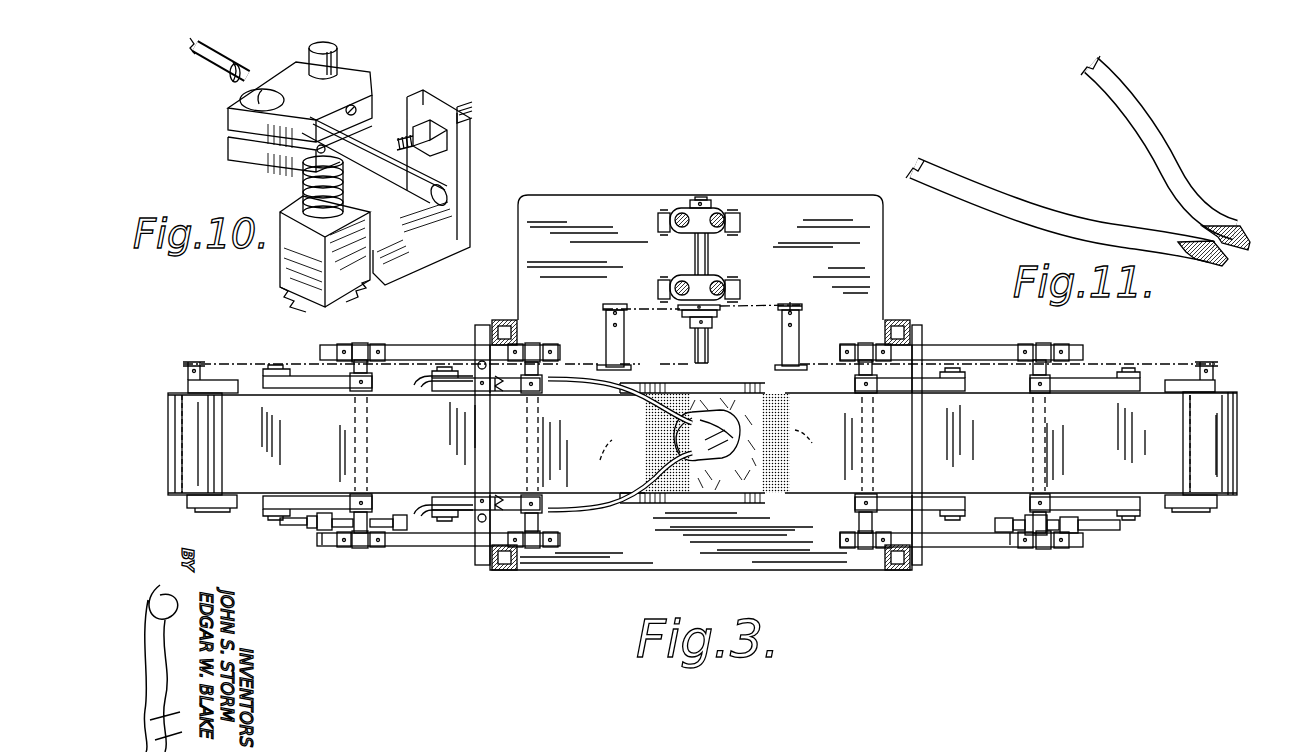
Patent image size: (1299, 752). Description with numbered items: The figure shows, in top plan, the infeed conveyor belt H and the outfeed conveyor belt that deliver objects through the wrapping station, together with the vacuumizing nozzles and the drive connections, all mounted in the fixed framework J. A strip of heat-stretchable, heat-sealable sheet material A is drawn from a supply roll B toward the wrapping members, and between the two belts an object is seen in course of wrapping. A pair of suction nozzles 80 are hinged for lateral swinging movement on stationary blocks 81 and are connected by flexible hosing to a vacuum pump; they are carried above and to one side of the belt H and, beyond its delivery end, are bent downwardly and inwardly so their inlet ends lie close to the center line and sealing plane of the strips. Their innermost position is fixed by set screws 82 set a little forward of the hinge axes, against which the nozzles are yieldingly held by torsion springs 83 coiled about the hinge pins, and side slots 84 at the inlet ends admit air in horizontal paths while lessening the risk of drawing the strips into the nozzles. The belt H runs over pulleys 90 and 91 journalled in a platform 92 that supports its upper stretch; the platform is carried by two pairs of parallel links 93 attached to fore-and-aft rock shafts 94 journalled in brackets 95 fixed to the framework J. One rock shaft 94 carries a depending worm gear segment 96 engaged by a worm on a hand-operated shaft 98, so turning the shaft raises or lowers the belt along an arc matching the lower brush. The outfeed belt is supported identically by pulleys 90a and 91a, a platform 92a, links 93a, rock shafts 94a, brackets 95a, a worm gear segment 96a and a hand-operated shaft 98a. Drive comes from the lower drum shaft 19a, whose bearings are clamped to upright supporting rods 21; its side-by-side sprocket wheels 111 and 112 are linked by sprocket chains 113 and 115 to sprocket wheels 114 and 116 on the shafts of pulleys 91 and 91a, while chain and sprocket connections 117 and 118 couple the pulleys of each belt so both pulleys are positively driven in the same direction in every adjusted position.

In FIG. 10, the suction nozzle 80 is at (422, 180).
In FIG. 11, the suction nozzle 80 is at (1177, 174).
In FIG. 3, the suction nozzle 80 is at (615, 397).
In FIG. 10, the stationary block 81 is at (287, 245).
In FIG. 10, the set screw 82 is at (394, 148).
In FIG. 3, the set screw 82 is at (501, 486).
In FIG. 10, the torsion spring 83 is at (302, 182).
In FIG. 11, the side slot 84 is at (1223, 233).
In FIG. 3, the framework J is at (562, 188).
In FIG. 3, the upright supporting rod 21 is at (722, 208).
In FIG. 3, the lower drum shaft 19a is at (708, 244).
In FIG. 3, the sprocket wheel 111 is at (687, 310).
In FIG. 3, the sprocket wheel 112 is at (720, 311).
In FIG. 3, the sprocket chain 113 is at (655, 308).
In FIG. 3, the sprocket wheel 114 is at (604, 318).
In FIG. 3, the sprocket chain 115 is at (760, 305).
In FIG. 3, the sprocket wheel 116 is at (802, 308).
In FIG. 3, the chain and sprocket connection 117 is at (228, 364).
In FIG. 3, the chain and sprocket connection 118 is at (775, 361).
In FIG. 3, the infeed conveyor belt H is at (702, 443).
In FIG. 3, the supply roll B is at (650, 393).
In FIG. 3, the strip of sheet material A is at (705, 393).
In FIG. 3, the pulley 90 is at (175, 497).
In FIG. 3, the pulley 90a is at (1225, 392).
In FIG. 3, the pulley 91 is at (597, 459).
In FIG. 3, the pulley 91a is at (819, 442).
In FIG. 3, the platform 92 is at (232, 508).
In FIG. 3, the platform 92a is at (1175, 508).
In FIG. 3, the parallel link 93 is at (296, 377).
In FIG. 3, the parallel link 93a is at (922, 391).
In FIG. 3, the rock shaft 94 is at (372, 382).
In FIG. 3, the rock shaft 94a is at (862, 374).
In FIG. 3, the bracket 95 is at (408, 350).
In FIG. 3, the bracket 95a is at (948, 350).
In FIG. 3, the worm gear segment 96 is at (383, 527).
In FIG. 3, the worm gear segment 96a is at (1060, 532).
In FIG. 3, the hand-operated shaft 98 is at (335, 527).
In FIG. 3, the hand-operated shaft 98a is at (1016, 535).